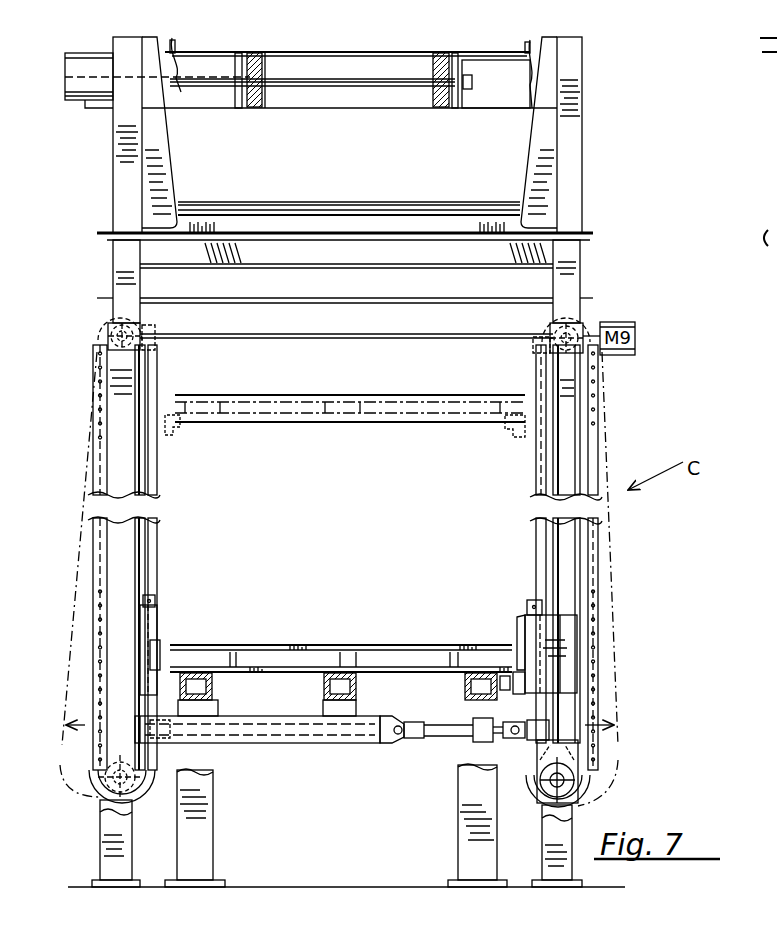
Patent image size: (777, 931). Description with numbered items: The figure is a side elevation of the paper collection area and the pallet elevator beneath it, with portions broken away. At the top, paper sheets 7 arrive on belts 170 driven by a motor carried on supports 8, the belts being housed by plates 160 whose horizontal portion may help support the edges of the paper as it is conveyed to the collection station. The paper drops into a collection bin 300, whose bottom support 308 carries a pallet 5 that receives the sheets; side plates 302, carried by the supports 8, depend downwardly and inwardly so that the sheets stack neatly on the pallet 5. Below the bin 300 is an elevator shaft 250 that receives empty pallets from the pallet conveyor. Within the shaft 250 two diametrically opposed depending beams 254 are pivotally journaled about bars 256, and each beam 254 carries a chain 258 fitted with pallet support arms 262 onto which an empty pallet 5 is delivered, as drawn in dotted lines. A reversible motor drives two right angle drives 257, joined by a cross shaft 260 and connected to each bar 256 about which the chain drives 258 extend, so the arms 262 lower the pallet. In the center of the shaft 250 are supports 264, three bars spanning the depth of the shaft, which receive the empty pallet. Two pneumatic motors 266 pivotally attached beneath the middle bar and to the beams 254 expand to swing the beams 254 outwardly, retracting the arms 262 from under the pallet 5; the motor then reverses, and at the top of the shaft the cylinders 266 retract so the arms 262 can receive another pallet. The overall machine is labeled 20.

The pallet 5 is at (399, 202).
The paper sheets 7 is at (347, 58).
The supports 8 is at (115, 278).
The machine 20 is at (776, 537).
The plates 160 is at (528, 74).
The belts 170 is at (263, 62).
The elevator shaft 250 is at (363, 505).
The depending beams 254 is at (112, 390).
The bar 256 is at (108, 333).
The right angle drives 257 is at (142, 328).
The chain 258 is at (95, 360).
The cross shaft 260 is at (320, 339).
The pallet support arms 262 is at (165, 424).
The supports 264 is at (218, 694).
The pneumatic motors 266 is at (252, 745).
The collection bin 300 is at (596, 178).
The plates 302 is at (164, 165).
The bottom support 308 is at (385, 258).